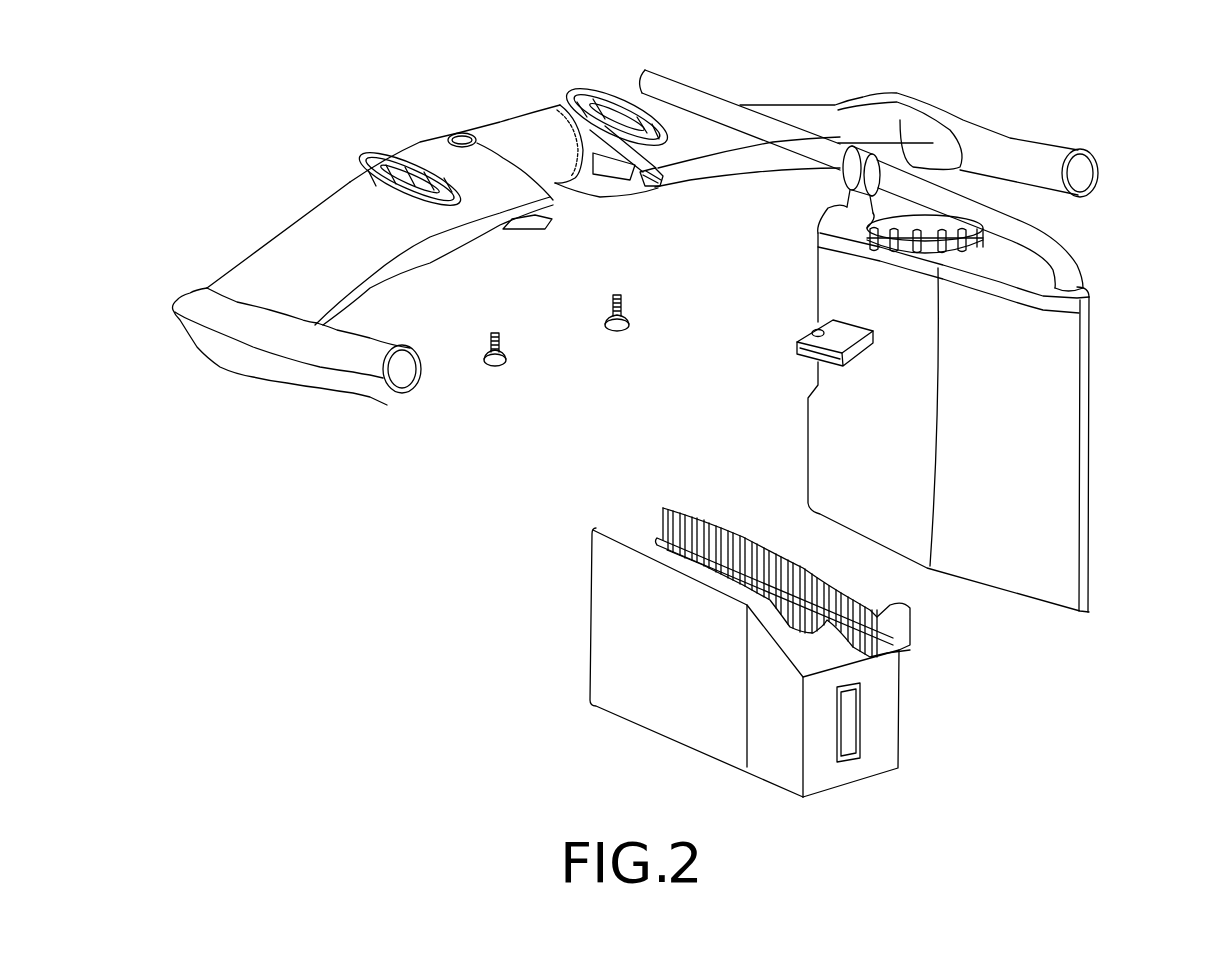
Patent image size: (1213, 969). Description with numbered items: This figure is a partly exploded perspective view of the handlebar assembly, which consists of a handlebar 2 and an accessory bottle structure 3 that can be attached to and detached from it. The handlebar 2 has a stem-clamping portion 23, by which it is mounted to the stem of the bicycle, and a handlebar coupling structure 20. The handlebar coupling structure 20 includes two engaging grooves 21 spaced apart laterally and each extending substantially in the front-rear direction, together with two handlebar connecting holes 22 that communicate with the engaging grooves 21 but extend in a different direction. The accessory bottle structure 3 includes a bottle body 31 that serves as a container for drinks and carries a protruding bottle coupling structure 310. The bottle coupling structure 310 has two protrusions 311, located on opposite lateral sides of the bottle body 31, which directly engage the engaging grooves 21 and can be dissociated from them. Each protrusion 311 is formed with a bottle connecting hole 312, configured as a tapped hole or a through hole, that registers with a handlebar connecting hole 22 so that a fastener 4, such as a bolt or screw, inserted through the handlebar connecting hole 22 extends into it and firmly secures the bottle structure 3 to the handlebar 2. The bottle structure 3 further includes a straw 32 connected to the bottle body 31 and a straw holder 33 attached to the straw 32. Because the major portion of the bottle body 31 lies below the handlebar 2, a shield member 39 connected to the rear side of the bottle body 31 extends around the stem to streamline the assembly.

The handlebar 2 is at (307, 213).
The stem-clamping portion 23 is at (497, 128).
The engaging grooves 21 is at (527, 230).
The handlebar coupling structure 20 is at (640, 220).
The handlebar connecting holes 22 is at (613, 178).
The fastener 4 is at (494, 372).
The straw holder 33 is at (855, 170).
The straw 32 is at (1057, 257).
The accessory bottle structure 3 is at (1110, 364).
The bottle body 31 is at (1053, 502).
The bottle coupling structure 310 is at (788, 361).
The protrusions 311 is at (803, 342).
The bottle connecting hole 312 is at (820, 330).
The shield member 39 is at (607, 656).